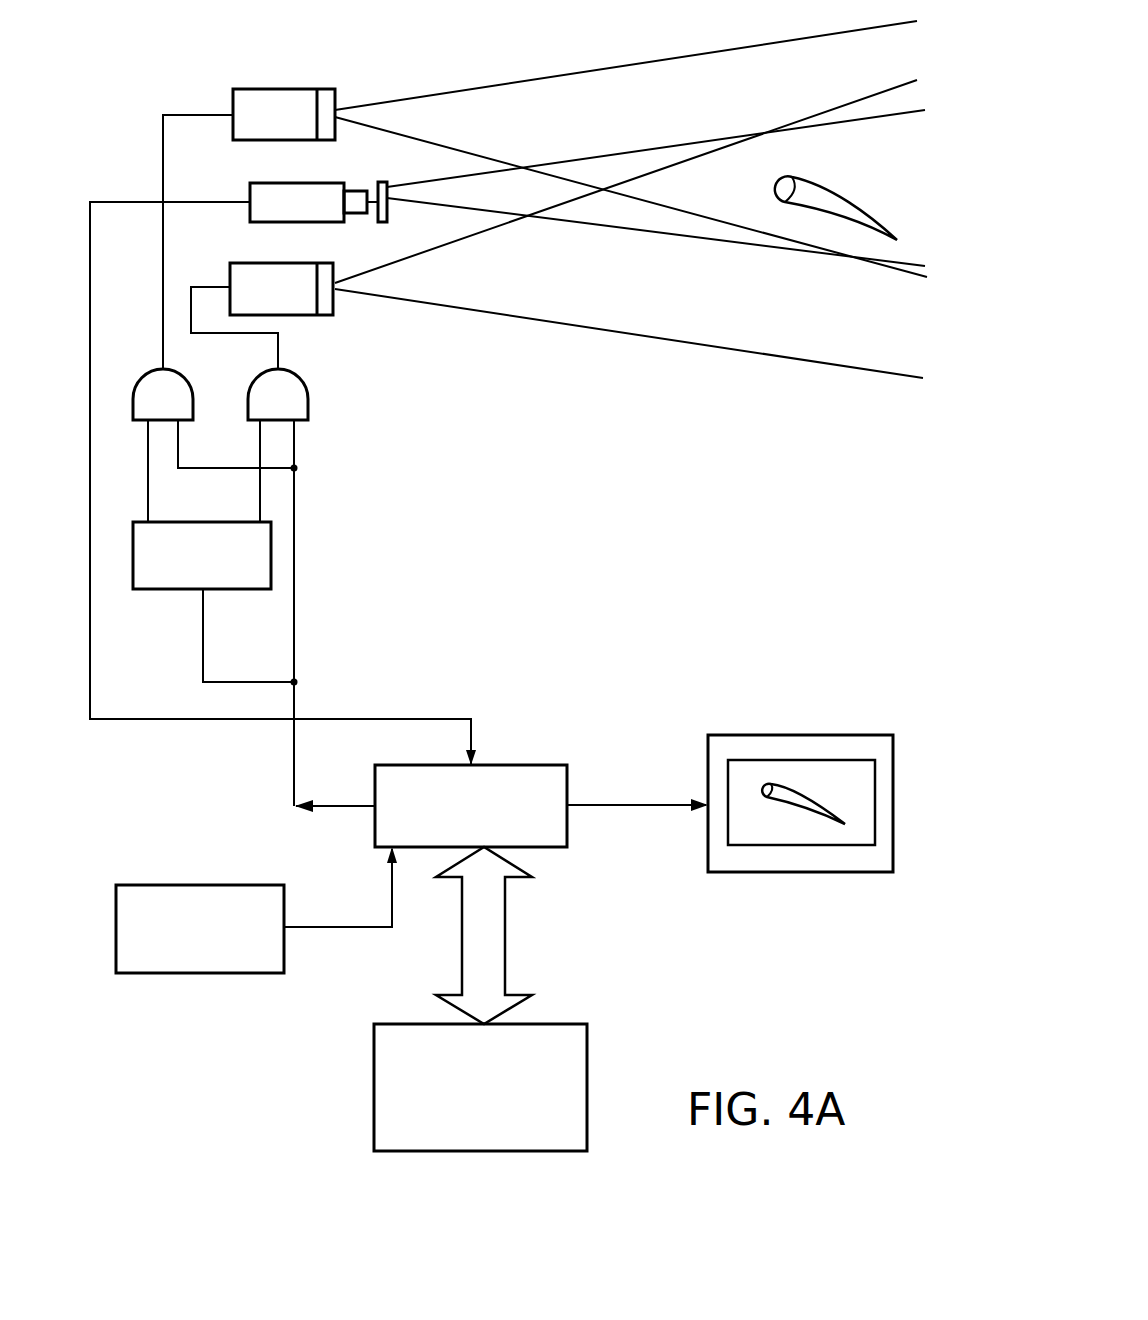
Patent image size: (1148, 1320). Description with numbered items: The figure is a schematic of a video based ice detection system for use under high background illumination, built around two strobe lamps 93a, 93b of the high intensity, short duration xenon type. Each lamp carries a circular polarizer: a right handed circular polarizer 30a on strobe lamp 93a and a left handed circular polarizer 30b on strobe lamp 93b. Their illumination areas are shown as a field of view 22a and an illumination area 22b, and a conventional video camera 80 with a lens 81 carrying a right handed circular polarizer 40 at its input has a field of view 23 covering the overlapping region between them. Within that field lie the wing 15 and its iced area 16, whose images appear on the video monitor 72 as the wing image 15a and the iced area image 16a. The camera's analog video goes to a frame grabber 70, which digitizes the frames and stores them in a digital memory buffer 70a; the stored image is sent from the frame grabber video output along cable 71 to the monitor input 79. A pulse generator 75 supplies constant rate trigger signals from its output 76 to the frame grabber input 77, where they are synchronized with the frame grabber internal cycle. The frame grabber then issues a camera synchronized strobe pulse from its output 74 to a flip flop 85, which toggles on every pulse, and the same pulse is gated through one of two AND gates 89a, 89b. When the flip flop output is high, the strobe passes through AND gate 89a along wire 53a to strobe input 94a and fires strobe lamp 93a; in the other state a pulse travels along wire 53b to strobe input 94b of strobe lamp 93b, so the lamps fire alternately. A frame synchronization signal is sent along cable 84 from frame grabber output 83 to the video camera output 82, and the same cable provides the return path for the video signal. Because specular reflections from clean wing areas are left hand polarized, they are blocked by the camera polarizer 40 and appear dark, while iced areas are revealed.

The wing 15 is at (870, 212).
The image of wing 15a is at (803, 798).
The iced area 16 is at (775, 183).
The image of iced area 16a is at (772, 792).
The field of view of strobe lamp 93a 22a is at (640, 66).
The illumination area of strobe lamp 93b 22b is at (673, 338).
The video camera field of view 23 is at (693, 233).
The right handed circular polarizer 30a is at (323, 90).
The left handed circular polarizer 30b is at (320, 263).
The right handed circular polarizer 40 is at (385, 222).
The wire 53a is at (162, 238).
The wire 53b is at (278, 360).
The frame grabber 70 is at (410, 762).
The digital memory buffer 70a is at (530, 1152).
The cable 71 is at (645, 803).
The video monitor 72 is at (743, 742).
The frame grabber output 74 is at (337, 807).
The pulse generator 75 is at (157, 883).
The pulse generator output 76 is at (313, 928).
The frame grabber input 77 is at (392, 887).
The video monitor input 79 is at (672, 810).
The video camera 80 is at (293, 183).
The lens 81 is at (353, 191).
The video camera output 82 is at (227, 200).
The frame grabber output 83 is at (472, 728).
The cable 84 is at (103, 718).
The flip flop 85 is at (243, 520).
The AND gate 89a is at (140, 402).
The AND gate 89b is at (253, 402).
The strobe lamp 93a is at (285, 88).
The strobe lamp 93b is at (240, 263).
The strobe input 94a is at (180, 113).
The strobe input 94b is at (198, 287).